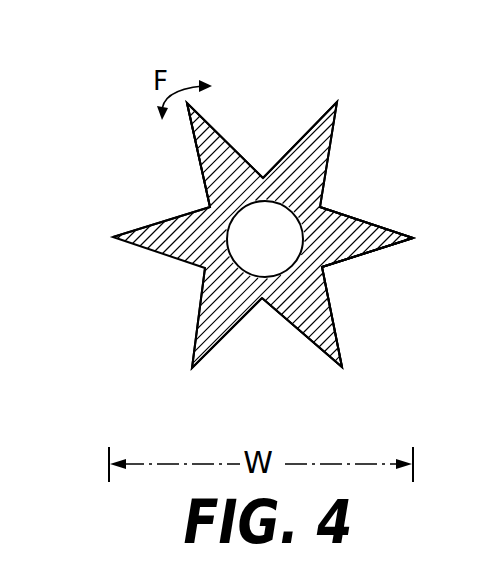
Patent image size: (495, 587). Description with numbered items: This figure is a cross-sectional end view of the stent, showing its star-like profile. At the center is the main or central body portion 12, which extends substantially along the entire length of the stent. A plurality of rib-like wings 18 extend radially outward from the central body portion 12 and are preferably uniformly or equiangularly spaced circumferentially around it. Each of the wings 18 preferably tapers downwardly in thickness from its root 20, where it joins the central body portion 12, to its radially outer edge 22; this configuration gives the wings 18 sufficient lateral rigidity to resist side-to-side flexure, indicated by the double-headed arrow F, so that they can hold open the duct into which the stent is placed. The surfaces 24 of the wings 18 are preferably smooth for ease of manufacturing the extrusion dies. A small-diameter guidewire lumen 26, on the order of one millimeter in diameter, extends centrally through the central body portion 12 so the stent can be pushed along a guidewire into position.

The central body portion 12 is at (265, 305).
The rib-like wings 18 is at (213, 135).
The roots 20 is at (210, 207).
The radially outer edges 22 is at (337, 103).
The surfaces 24 is at (380, 226).
The guidewire lumen 26 is at (237, 243).